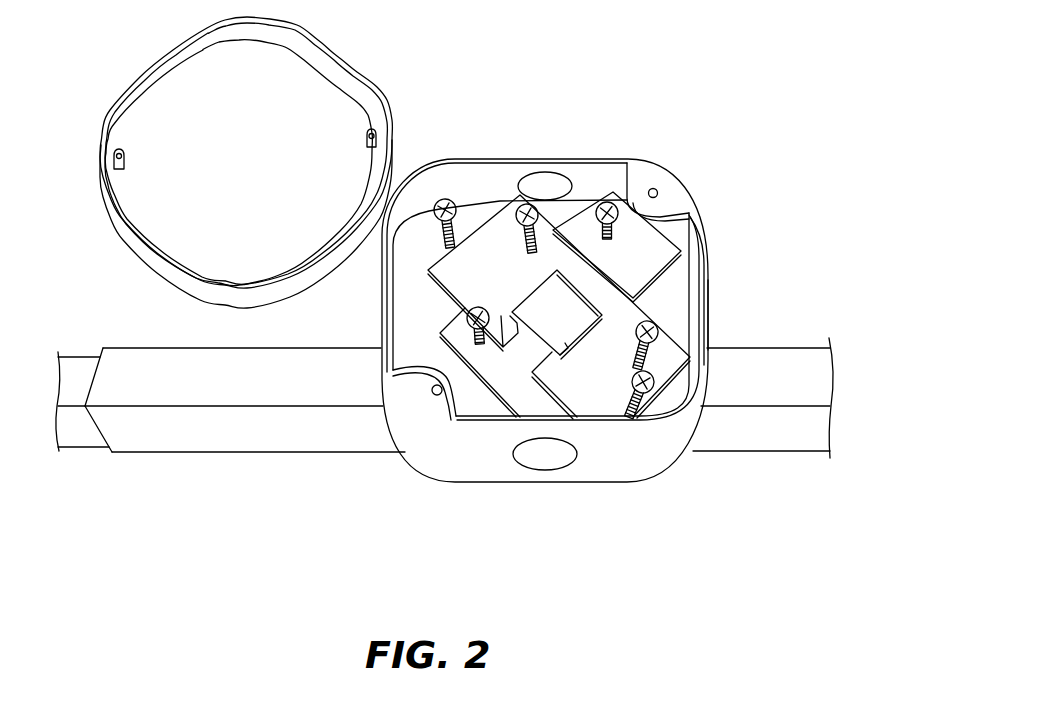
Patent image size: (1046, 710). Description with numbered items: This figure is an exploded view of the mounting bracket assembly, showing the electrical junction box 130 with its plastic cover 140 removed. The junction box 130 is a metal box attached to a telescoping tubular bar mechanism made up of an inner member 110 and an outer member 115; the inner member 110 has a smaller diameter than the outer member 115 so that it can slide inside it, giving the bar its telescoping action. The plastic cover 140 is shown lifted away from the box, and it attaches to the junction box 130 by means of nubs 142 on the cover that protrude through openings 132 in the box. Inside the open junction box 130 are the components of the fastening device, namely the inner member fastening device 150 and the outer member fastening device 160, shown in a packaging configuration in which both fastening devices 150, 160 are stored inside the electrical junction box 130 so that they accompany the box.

The inner member 110 is at (77, 353).
The outer member 115 is at (273, 347).
The electrical junction box 130 is at (640, 483).
The openings 132 is at (657, 190).
The plastic cover 140 is at (354, 65).
The nubs 142 is at (373, 128).
The inner member fastening device 150 is at (697, 238).
The outer member fastening device 160 is at (688, 285).